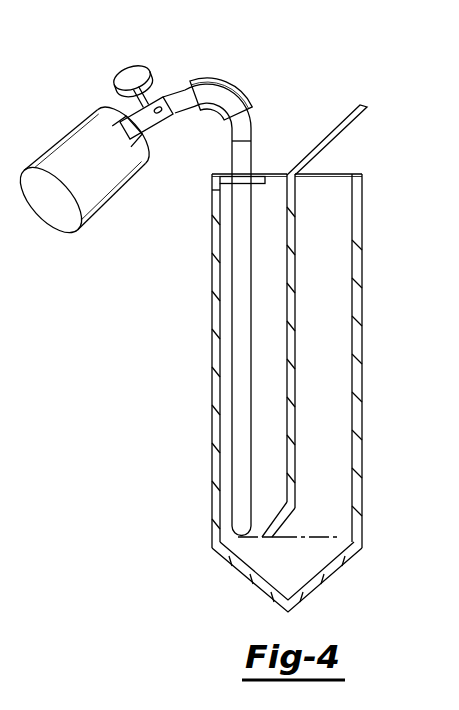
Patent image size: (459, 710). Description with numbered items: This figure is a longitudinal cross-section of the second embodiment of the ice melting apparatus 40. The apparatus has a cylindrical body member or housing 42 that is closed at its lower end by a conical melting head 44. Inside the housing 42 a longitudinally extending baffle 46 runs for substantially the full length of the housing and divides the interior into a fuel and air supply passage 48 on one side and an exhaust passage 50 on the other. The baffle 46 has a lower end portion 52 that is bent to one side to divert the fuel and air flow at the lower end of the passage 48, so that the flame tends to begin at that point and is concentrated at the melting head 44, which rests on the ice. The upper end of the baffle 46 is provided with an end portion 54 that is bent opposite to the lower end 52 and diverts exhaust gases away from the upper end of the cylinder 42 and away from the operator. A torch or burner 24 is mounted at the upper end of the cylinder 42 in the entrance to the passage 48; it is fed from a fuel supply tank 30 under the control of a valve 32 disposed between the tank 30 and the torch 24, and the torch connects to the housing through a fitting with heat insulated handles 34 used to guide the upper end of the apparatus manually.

The torch 24 is at (244, 153).
The fuel supply tank 30 is at (98, 174).
The valve 32 is at (137, 72).
The heat insulated handles 34 is at (227, 89).
The ice melting apparatus 40 is at (366, 268).
The cylindrical body member or housing 42 is at (360, 380).
The conical melting head 44 is at (307, 578).
The baffle 46 is at (297, 342).
The fuel and air supply passage 48 is at (267, 378).
The exhaust passage 50 is at (337, 422).
The lower end portion 52 is at (273, 517).
The end portion 54 is at (346, 121).